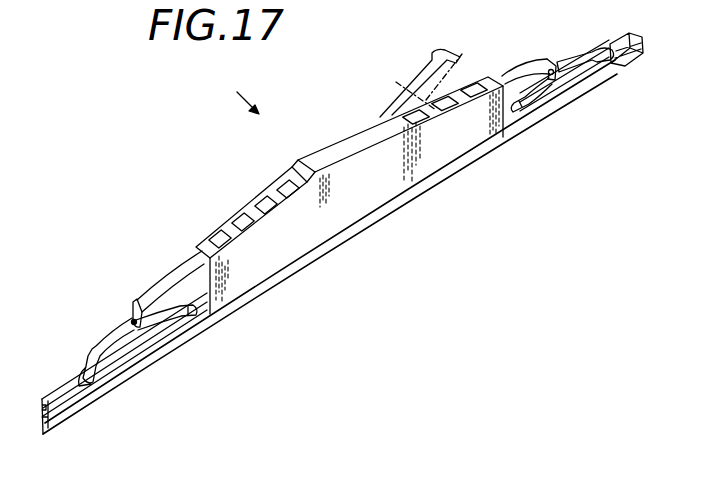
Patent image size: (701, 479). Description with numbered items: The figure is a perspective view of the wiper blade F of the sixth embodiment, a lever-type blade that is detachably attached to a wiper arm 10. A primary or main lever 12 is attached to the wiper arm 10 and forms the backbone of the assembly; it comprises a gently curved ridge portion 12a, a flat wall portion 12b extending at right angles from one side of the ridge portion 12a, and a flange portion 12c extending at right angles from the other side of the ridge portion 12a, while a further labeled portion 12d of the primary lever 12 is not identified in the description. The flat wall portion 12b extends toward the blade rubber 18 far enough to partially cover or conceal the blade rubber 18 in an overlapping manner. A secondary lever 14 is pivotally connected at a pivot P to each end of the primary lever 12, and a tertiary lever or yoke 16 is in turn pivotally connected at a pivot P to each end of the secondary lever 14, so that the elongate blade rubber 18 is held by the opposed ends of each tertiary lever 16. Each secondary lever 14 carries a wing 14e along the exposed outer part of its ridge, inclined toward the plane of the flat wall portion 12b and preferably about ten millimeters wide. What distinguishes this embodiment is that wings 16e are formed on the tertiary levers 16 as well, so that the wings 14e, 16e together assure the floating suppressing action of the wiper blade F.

The wiper arm 10 is at (416, 83).
The primary lever 12 is at (332, 146).
The ridge portion 12a is at (252, 211).
The flat wall portion 12b is at (355, 203).
The flange portion 12c is at (215, 232).
The aperture in primary yoke 12d is at (283, 181).
The secondary lever 14 is at (186, 278).
The wing 14e is at (161, 283).
The tertiary lever 16 is at (97, 370).
The wing 16e is at (107, 338).
The blade rubber 18 is at (423, 190).
The pivot P is at (136, 327).
The wiper blade F is at (236, 94).